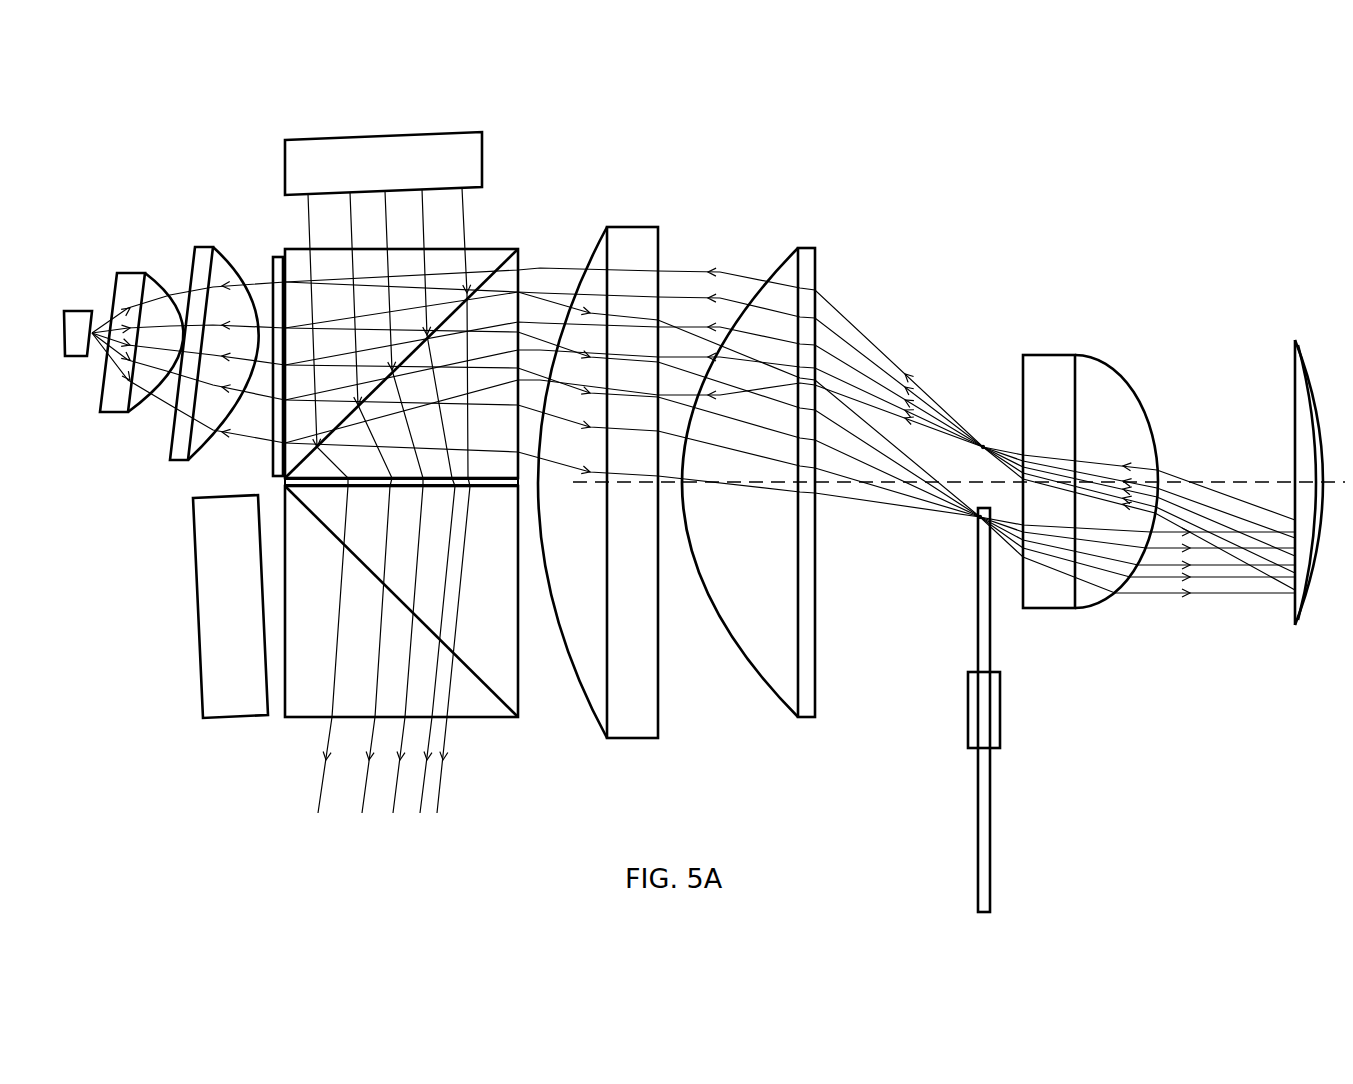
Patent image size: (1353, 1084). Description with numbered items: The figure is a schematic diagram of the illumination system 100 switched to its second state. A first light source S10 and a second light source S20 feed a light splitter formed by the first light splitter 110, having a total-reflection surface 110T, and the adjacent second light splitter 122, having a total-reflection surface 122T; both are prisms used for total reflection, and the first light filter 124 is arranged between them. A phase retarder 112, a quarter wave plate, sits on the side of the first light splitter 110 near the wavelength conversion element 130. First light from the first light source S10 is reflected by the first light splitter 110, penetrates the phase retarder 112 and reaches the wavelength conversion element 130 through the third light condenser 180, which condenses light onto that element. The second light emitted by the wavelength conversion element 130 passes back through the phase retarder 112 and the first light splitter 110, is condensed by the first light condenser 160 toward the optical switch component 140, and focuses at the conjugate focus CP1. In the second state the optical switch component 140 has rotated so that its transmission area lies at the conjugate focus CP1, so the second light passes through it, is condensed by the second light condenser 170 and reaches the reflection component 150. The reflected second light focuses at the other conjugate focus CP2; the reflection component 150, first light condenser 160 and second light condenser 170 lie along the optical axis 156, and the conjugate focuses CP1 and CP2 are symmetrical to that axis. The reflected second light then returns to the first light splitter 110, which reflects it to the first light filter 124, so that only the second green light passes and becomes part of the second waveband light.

The illumination system 100 is at (106, 153).
The first light source S10 is at (285, 165).
The second light source S20 is at (193, 605).
The first light splitter 110 is at (443, 321).
The total-reflection surface 110T is at (520, 272).
The phase retarder 112 is at (278, 257).
The second light splitter 122 is at (390, 641).
The total-reflection surface 122T is at (508, 710).
The first light filter 124 is at (304, 489).
The wavelength conversion element 130 is at (82, 308).
The optical switch component 140 is at (990, 832).
The reflection component 150 is at (1298, 322).
The optical axis 156 is at (1243, 475).
The first light condenser 160 is at (668, 213).
The second light condenser 170 is at (1103, 345).
The third light condenser 180 is at (176, 248).
The conjugate focus CP1 is at (980, 520).
The conjugate focus CP2 is at (983, 445).